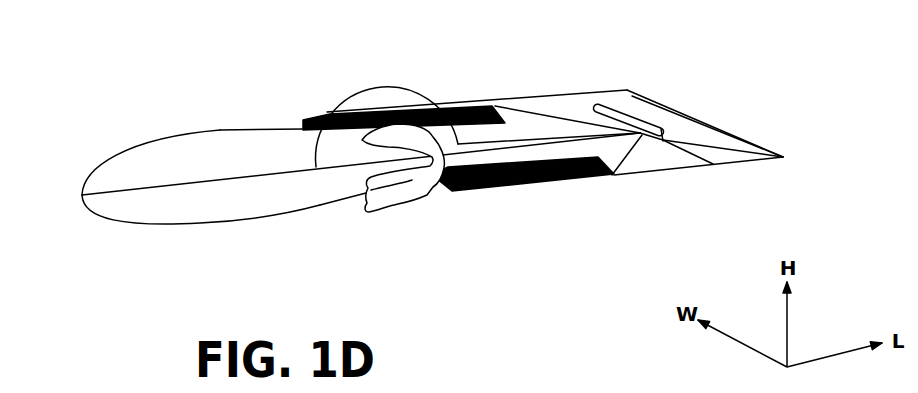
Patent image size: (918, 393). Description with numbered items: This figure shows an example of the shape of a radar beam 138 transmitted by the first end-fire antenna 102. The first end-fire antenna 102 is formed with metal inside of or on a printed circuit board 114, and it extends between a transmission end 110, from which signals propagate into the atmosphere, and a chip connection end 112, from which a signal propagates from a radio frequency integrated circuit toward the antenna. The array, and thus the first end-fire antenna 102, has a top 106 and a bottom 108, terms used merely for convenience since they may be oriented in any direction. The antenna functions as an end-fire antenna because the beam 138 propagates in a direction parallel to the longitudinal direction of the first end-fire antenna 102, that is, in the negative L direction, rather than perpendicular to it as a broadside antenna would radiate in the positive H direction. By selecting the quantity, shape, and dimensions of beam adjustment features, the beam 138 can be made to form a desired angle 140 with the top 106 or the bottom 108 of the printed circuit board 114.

The first end-fire antenna 102 is at (528, 98).
The top 106 is at (576, 103).
The bottom 108 is at (556, 183).
The transmission end 110 is at (437, 171).
The chip connection end 112 is at (775, 145).
The printed circuit board 114 is at (677, 168).
The beam 138 is at (226, 204).
The angle 140 is at (390, 92).